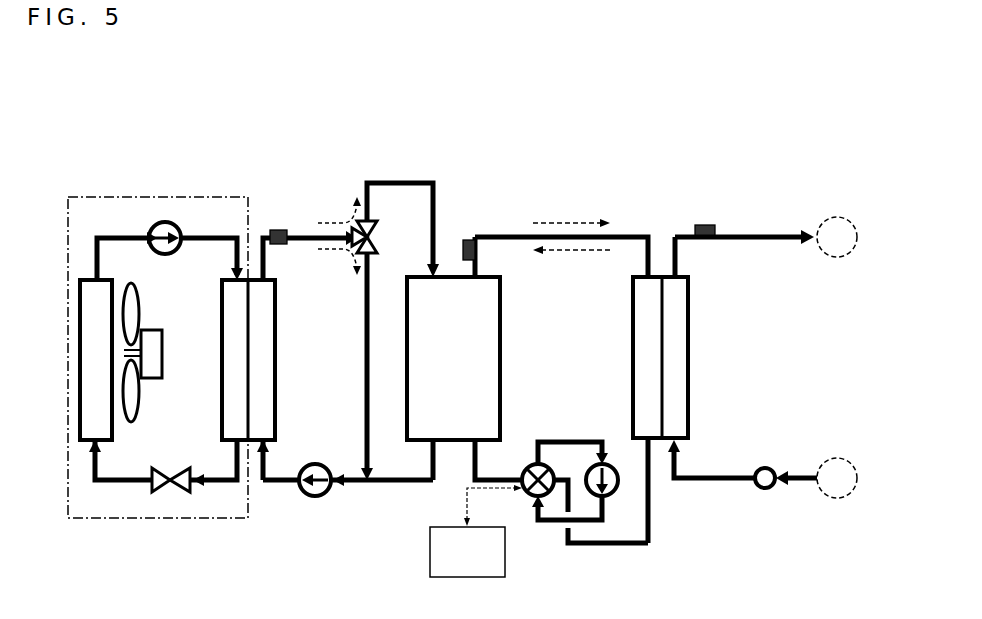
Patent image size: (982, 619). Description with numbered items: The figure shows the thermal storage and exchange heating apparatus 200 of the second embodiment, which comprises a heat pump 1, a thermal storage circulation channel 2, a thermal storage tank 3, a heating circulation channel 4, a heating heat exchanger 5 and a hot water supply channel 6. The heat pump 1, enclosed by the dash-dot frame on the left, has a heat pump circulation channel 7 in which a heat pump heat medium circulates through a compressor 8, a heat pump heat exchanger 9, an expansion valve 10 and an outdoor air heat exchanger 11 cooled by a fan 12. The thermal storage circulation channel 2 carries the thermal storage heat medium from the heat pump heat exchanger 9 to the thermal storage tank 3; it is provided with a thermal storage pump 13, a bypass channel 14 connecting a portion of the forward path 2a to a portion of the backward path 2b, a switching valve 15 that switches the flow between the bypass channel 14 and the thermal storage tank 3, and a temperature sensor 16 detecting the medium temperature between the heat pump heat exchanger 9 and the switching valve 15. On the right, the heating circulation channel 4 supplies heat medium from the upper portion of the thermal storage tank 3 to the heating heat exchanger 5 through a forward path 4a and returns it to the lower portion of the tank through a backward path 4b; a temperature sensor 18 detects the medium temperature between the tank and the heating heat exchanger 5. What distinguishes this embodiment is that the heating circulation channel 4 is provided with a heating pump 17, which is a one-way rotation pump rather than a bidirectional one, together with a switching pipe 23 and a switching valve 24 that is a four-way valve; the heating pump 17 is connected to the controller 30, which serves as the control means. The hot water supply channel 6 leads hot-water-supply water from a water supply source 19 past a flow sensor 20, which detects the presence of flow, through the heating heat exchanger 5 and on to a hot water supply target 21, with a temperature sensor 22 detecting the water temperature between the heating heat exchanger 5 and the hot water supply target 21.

The heat pump 1 is at (170, 195).
The thermal storage circulation channel 2 is at (425, 484).
The forward path 2a is at (390, 181).
The backward path 2b is at (385, 484).
The thermal storage tank 3 is at (500, 348).
The heating circulation channel 4 is at (510, 237).
The forward path 4a is at (630, 237).
The backward path 4b is at (650, 496).
The heating heat exchanger 5 is at (690, 342).
The hot water supply channel 6 is at (730, 241).
The heat pump circulation channel 7 is at (118, 237).
The compressor 8 is at (171, 224).
The heat pump heat exchanger 9 is at (276, 338).
The expansion valve 10 is at (178, 494).
The outdoor air heat exchanger 11 is at (80, 305).
The fan 12 is at (140, 300).
The thermal storage pump 13 is at (305, 496).
The bypass channel 14 is at (365, 380).
The switching valve 15 is at (378, 240).
The temperature sensor 16 is at (268, 228).
The heating pump 17 is at (602, 462).
The temperature sensor 18 is at (470, 240).
The water supply source 19 is at (840, 458).
The flow sensor 20 is at (768, 468).
The hot water supply target 21 is at (838, 217).
The temperature sensor 22 is at (700, 225).
The switching pipe 23 is at (548, 524).
The switching valve 24 is at (532, 465).
The controller 30 is at (505, 553).
The thermal storage and exchange heating apparatus 200 is at (447, 152).